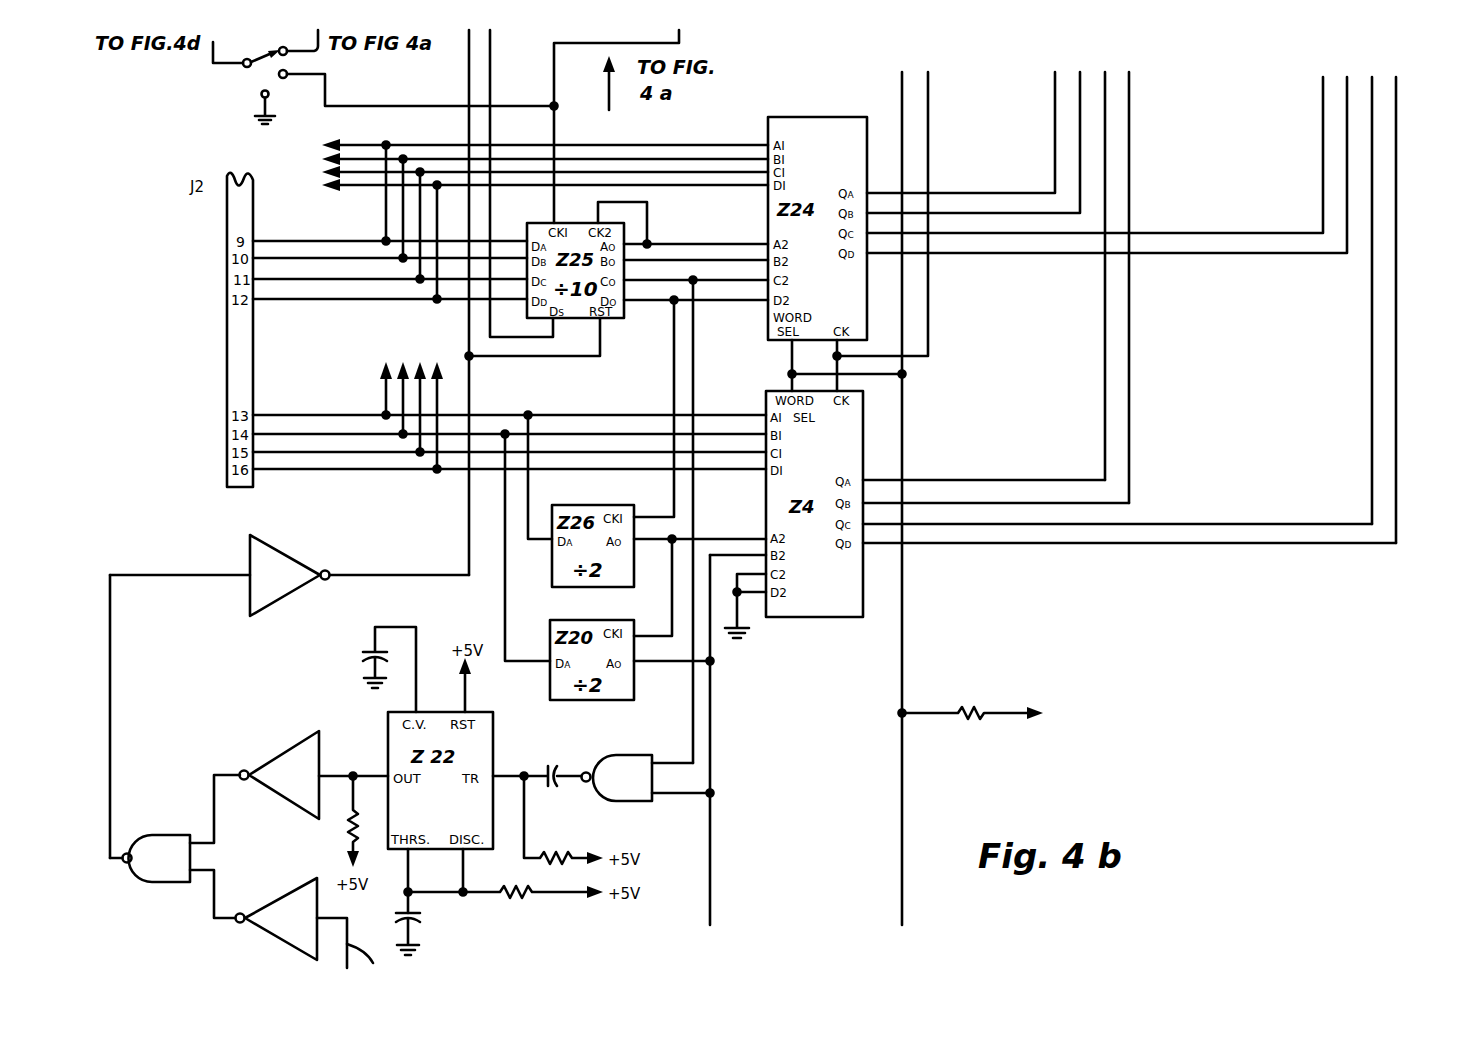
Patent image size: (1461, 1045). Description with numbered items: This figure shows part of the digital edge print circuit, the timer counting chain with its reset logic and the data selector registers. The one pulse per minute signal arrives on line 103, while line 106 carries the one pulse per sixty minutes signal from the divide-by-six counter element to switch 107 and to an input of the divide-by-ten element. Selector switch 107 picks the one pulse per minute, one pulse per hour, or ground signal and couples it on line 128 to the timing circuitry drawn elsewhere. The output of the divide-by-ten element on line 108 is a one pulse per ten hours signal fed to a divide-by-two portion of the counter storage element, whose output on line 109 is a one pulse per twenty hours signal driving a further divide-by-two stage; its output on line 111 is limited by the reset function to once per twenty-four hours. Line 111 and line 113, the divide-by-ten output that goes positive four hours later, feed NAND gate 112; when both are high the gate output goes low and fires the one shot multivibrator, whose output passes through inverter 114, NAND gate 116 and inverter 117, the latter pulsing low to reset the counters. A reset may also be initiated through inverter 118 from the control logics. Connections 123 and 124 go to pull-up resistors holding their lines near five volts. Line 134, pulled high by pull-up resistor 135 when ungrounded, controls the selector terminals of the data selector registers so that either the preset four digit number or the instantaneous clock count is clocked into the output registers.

The line 128 is at (228, 66).
The line 103 is at (319, 56).
The selector switch 107 is at (253, 84).
The line 106 is at (556, 70).
The connections 123 is at (521, 219).
The connections 124 is at (411, 406).
The line 108 is at (649, 305).
The line 113 is at (695, 331).
The inverter 117 is at (294, 557).
The line 109 is at (656, 542).
The line 111 is at (662, 664).
The inverter 114 is at (297, 748).
The NAND gate 116 is at (176, 832).
The inverter 118 is at (284, 893).
The NAND gate 112 is at (655, 802).
The line 134 is at (903, 829).
The pull-up resistor 135 is at (977, 708).